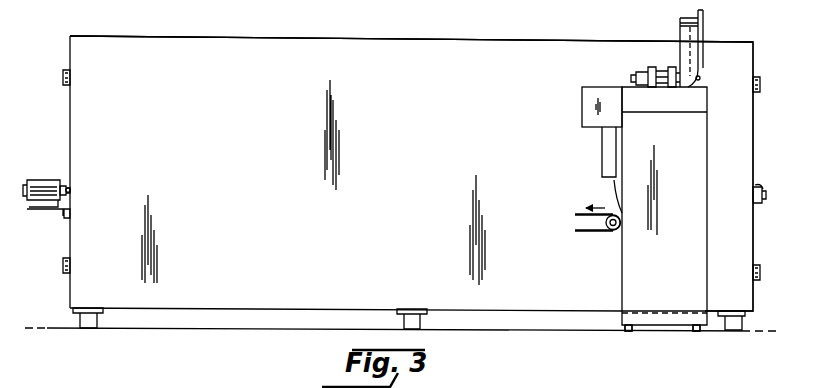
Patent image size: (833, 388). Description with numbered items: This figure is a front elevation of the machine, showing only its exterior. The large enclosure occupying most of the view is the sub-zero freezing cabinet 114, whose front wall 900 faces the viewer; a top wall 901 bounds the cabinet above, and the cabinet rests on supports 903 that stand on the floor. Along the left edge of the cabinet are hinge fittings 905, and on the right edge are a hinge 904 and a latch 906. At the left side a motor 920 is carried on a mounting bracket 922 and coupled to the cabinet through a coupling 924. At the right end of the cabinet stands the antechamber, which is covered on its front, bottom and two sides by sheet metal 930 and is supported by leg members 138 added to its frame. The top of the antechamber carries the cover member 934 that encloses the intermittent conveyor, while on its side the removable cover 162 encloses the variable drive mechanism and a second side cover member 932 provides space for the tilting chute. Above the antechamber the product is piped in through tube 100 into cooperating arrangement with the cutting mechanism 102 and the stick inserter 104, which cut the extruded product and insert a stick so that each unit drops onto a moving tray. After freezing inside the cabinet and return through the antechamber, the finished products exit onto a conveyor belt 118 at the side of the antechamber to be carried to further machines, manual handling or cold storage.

The freezer cabinet front wall 900 is at (258, 58).
The housing top wall 901 is at (364, 38).
The sub-zero freezing cabinet 114 is at (457, 37).
The stick inserter 104 is at (678, 35).
The tube 100 is at (705, 21).
The cutting mechanism 102 is at (662, 63).
The cover member 934 is at (596, 86).
The removable cover 162 is at (601, 158).
The second side cover member 932 is at (615, 188).
The conveyor belt 118 is at (605, 232).
The sheet metal 930 is at (630, 289).
The leg members 138 is at (677, 331).
The left hinge 905 is at (70, 125).
The coupling 924 is at (65, 184).
The motor 920 is at (40, 182).
The motor mounting bracket 922 is at (60, 214).
The support legs 903 is at (209, 310).
The right hinge 904 is at (753, 125).
The latch 906 is at (758, 190).